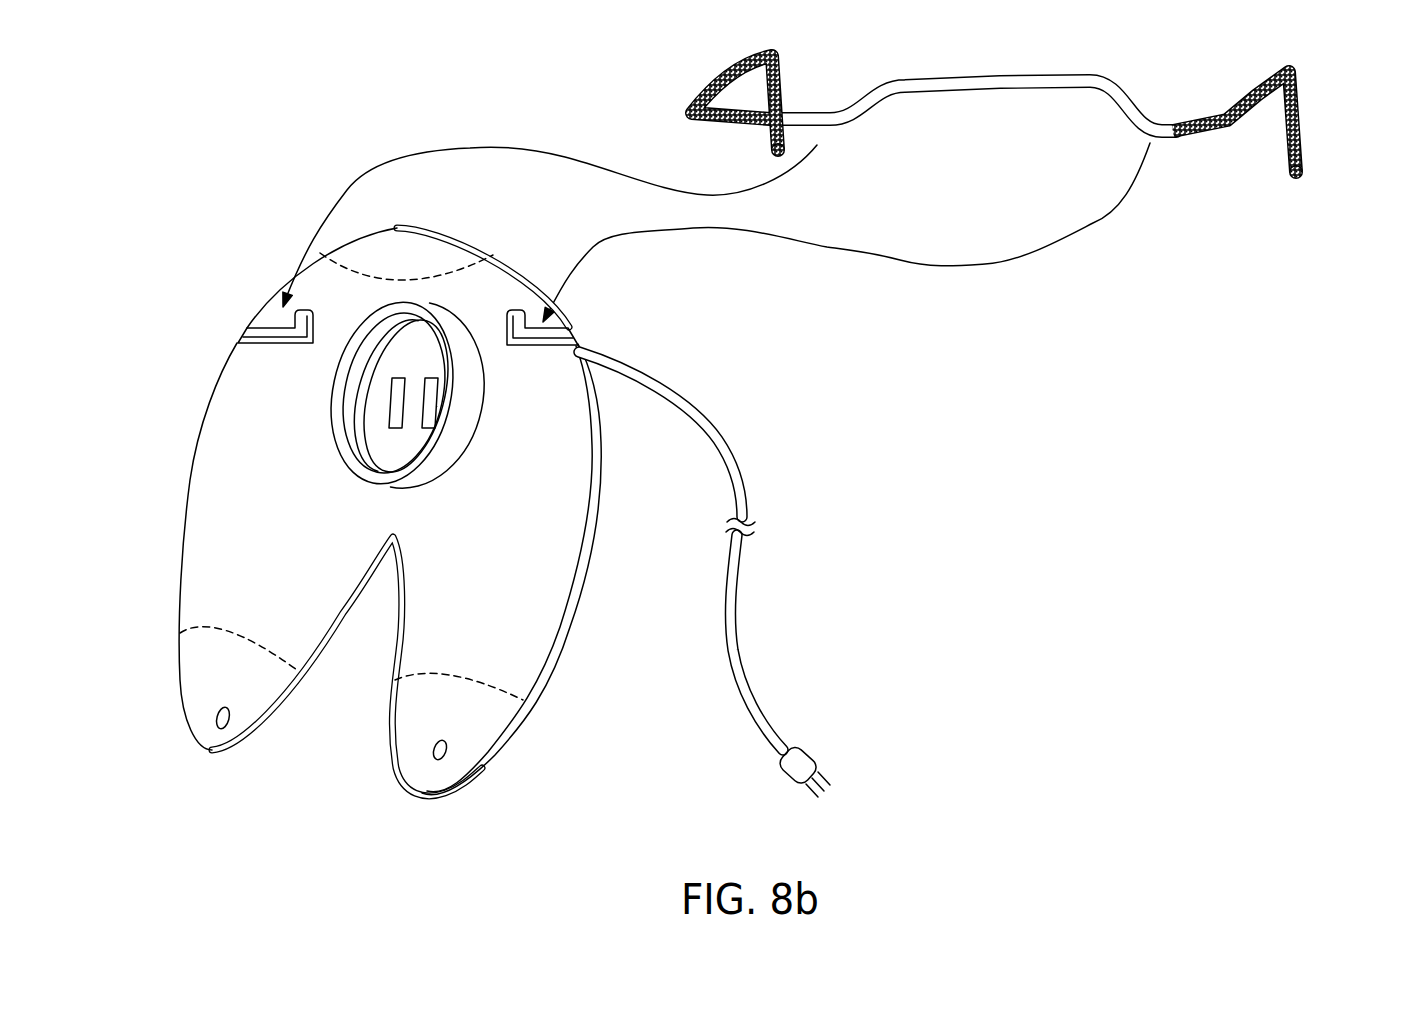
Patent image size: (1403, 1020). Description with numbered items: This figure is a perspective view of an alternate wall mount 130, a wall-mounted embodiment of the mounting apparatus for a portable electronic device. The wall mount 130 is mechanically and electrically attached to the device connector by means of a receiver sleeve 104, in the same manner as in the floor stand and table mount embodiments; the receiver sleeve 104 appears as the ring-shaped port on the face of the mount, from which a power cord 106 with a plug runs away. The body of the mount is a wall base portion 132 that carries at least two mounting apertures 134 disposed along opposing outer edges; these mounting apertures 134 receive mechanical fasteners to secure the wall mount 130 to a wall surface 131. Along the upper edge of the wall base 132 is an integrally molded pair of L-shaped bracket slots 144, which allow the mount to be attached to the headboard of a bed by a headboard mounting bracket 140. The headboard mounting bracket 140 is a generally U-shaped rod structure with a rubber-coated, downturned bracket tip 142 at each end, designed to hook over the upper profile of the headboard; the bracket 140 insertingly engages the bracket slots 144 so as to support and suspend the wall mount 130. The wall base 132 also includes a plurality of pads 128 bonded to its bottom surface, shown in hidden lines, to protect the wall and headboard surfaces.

The receiver sleeve 104 is at (355, 403).
The power cord with plug 106 is at (745, 495).
The pads 128 is at (385, 277).
The wall mount 130 is at (213, 364).
The wall surface 131 is at (582, 750).
The wall base portion 132 is at (200, 531).
The mounting apertures 134 is at (437, 762).
The headboard mounting bracket 140 is at (990, 102).
The bracket tip 142 is at (786, 87).
The bracket slots 144 is at (247, 334).